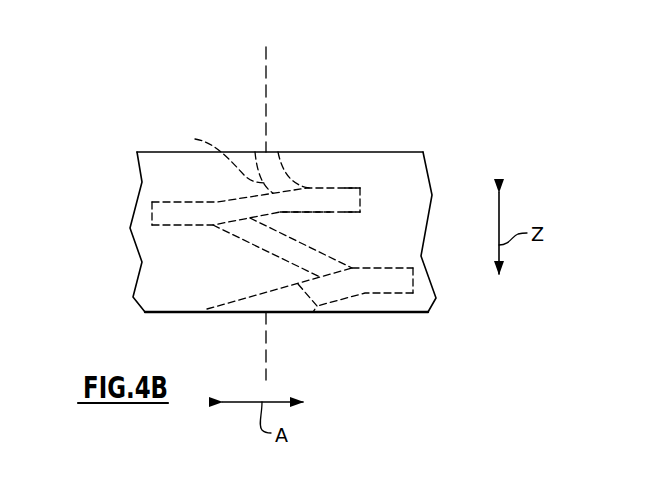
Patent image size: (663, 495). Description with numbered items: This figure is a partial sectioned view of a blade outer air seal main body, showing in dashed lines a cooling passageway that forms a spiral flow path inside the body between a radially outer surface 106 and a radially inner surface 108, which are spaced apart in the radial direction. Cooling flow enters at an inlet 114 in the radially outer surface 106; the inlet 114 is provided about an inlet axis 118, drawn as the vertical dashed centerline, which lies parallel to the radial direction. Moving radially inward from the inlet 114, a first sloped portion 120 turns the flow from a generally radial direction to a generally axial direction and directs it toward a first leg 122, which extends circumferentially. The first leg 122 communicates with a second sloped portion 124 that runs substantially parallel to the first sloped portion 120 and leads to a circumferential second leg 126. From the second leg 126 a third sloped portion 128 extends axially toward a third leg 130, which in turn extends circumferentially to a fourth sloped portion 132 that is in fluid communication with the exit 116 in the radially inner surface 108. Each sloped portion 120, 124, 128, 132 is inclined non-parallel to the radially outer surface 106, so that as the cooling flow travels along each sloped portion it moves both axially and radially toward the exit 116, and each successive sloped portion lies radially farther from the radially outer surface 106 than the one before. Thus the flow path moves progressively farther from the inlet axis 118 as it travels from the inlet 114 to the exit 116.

The radially outer surface 106 is at (379, 152).
The radially inner surface 108 is at (383, 313).
The inlet 114 is at (265, 151).
The exit 116 is at (255, 313).
The inlet axis 118 is at (266, 100).
The first sloped portion 120 is at (200, 139).
The first leg 122 is at (352, 200).
The second sloped portion 124 is at (280, 215).
The second leg 126 is at (150, 212).
The third sloped portion 128 is at (248, 240).
The third leg 130 is at (418, 280).
The fourth sloped portion 132 is at (313, 312).